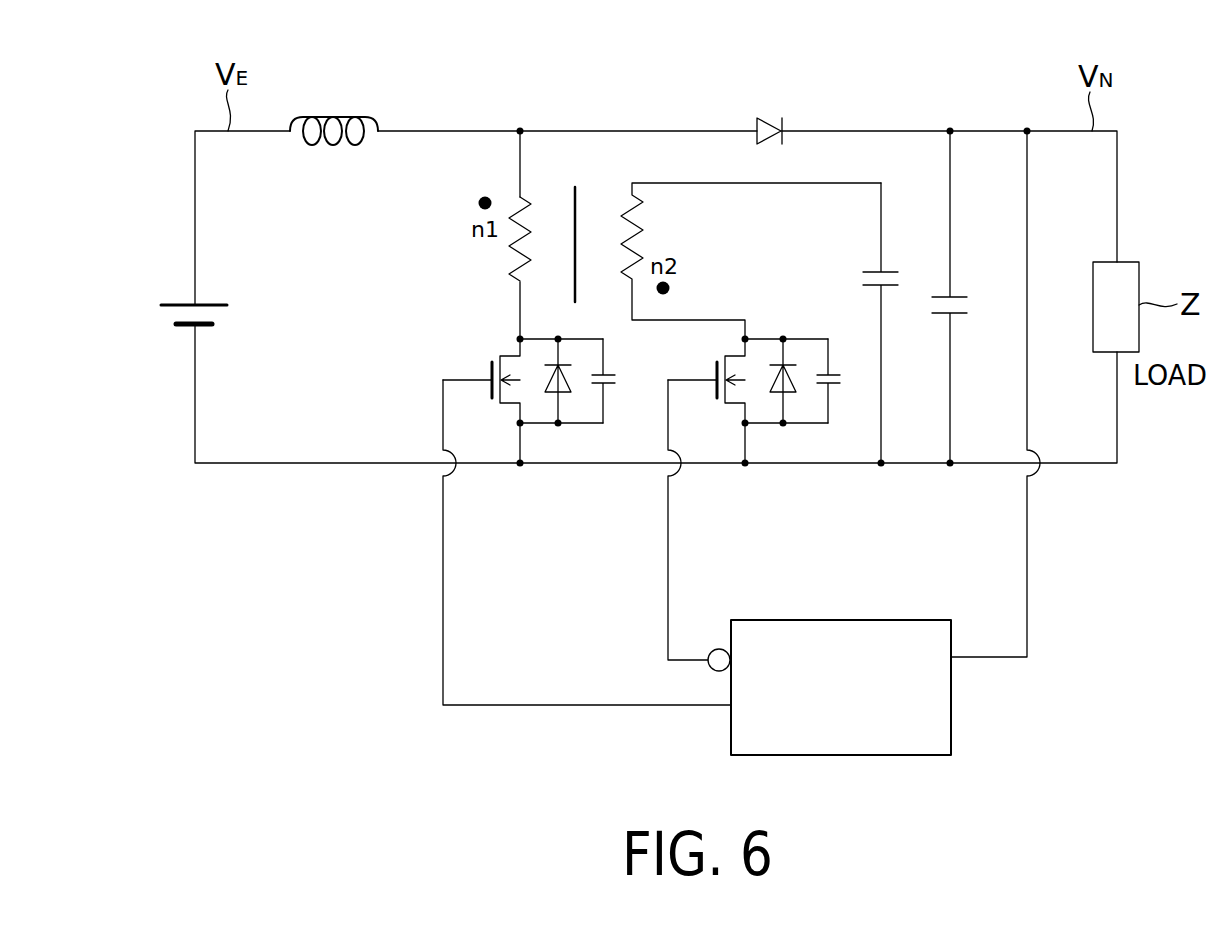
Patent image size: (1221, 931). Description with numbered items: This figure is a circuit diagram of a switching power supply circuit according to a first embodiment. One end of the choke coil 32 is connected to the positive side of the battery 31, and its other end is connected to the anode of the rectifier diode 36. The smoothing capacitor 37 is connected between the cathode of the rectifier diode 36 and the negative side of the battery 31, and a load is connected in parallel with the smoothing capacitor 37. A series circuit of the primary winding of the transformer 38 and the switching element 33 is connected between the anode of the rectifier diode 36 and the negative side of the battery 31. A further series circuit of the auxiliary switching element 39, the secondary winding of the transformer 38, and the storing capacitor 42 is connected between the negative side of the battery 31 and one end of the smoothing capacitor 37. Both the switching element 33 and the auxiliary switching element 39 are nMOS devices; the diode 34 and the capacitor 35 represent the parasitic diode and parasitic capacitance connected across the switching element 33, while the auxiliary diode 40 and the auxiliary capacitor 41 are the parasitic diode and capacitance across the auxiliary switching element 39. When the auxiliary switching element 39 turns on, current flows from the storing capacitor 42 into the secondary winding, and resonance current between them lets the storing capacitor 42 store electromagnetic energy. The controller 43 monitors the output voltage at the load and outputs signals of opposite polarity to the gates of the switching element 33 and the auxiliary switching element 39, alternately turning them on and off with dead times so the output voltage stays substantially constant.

The battery 31 is at (176, 305).
The choke coil 32 is at (333, 117).
The switching element 33 is at (497, 356).
The diode 34 is at (549, 400).
The capacitor 35 is at (594, 385).
The rectifier diode 36 is at (771, 118).
The smoothing capacitor 37 is at (957, 297).
The transformer 38 is at (577, 198).
The auxiliary switching element 39 is at (718, 404).
The auxiliary diode 40 is at (774, 398).
The auxiliary capacitor 41 is at (819, 387).
The storing capacitor 42 is at (872, 268).
The controller 43 is at (840, 620).